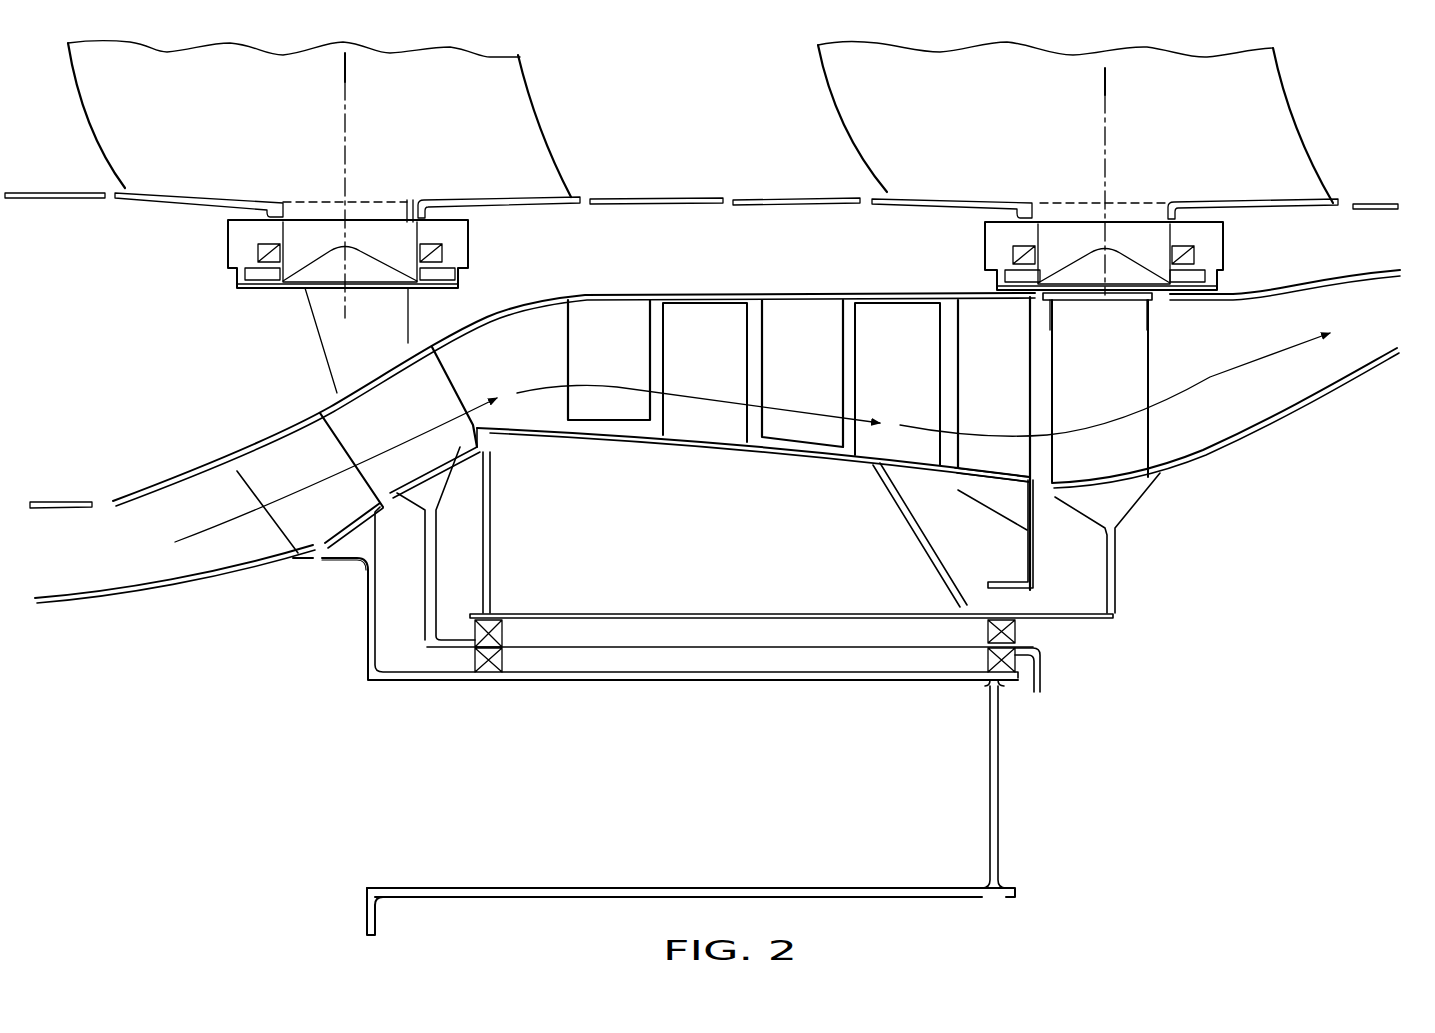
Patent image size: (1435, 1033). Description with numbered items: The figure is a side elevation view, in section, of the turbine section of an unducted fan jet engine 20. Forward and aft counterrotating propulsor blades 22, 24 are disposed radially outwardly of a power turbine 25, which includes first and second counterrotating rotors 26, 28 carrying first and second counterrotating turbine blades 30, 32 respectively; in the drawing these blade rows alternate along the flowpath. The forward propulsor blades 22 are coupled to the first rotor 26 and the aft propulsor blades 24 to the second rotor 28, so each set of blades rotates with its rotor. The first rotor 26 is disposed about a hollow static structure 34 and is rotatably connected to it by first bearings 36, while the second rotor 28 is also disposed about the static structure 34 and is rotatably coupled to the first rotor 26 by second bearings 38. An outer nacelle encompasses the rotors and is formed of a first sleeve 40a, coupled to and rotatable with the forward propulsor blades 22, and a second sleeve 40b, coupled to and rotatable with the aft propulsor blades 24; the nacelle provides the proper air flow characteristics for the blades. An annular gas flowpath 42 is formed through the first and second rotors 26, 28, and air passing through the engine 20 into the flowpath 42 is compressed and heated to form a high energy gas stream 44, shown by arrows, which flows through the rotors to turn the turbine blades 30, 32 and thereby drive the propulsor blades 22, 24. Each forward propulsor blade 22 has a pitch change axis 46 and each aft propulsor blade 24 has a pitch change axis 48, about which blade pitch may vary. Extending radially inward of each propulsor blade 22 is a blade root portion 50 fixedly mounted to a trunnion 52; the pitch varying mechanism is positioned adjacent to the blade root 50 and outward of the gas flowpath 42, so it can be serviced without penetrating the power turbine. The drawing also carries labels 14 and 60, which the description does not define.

The engine frame 14 is at (300, 558).
The unducted fan jet engine 20 is at (695, 113).
The forward propulsor blades 22 is at (95, 70).
The aft propulsor blades 24 is at (1240, 93).
The power turbine 25 is at (650, 275).
The first rotor 26 is at (262, 440).
The second rotor 28 is at (823, 453).
The first turbine blades 30 is at (401, 422).
The second turbine blades 32 is at (506, 372).
The hollow static structure 34 is at (992, 824).
The first bearings 36 is at (487, 672).
The second bearings 38 is at (490, 618).
The first sleeve 40a is at (70, 192).
The second sleeve 40b is at (808, 195).
The annular gas flowpath 42 is at (125, 533).
The high energy gas stream 44 is at (1227, 370).
The pitch change axis 46 is at (348, 114).
The pitch change axis 48 is at (1108, 125).
The blade root portion 50 is at (382, 213).
The trunnion 52 is at (302, 258).
The blade support bearing 60 is at (415, 280).